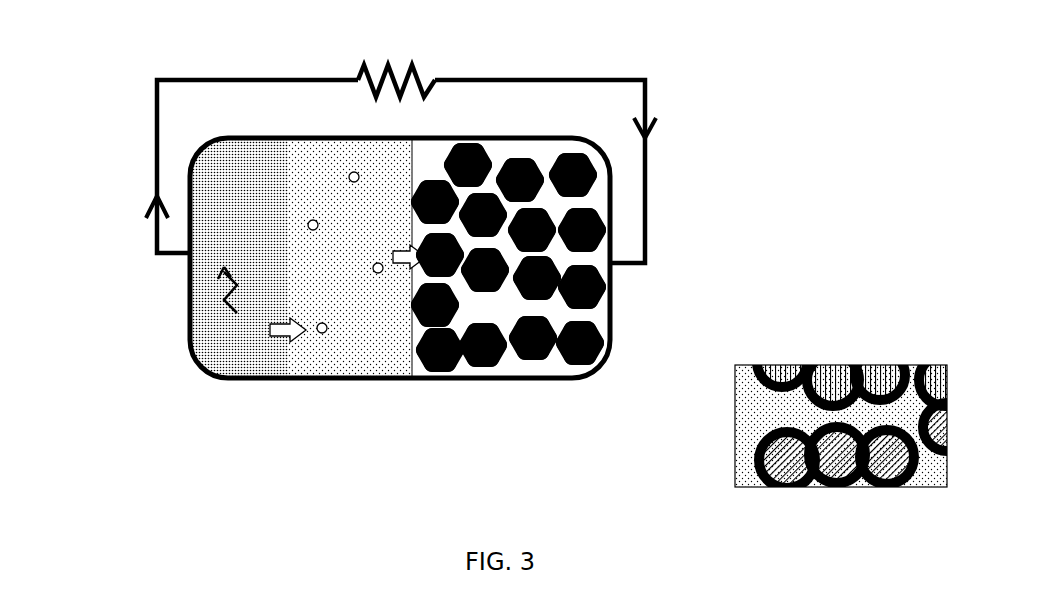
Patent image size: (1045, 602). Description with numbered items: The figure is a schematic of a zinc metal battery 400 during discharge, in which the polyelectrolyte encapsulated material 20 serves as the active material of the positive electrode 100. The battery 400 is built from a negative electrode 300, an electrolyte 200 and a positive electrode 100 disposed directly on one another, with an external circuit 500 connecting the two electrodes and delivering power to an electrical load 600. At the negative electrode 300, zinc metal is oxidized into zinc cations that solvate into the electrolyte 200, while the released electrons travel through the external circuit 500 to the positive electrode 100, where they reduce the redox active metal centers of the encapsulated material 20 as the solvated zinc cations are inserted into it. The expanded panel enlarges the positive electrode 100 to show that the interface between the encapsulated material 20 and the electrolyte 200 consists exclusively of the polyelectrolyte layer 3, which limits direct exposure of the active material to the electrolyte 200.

The polyelectrolyte layer 3 is at (826, 358).
The polyelectrolyte encapsulated material 20 is at (788, 387).
The positive electrode 100 is at (597, 403).
The electrolyte 200 is at (403, 403).
The negative electrode 300 is at (280, 403).
The zinc battery 400 is at (391, 290).
The external circuit 500 is at (668, 213).
The electrical load 600 is at (426, 60).